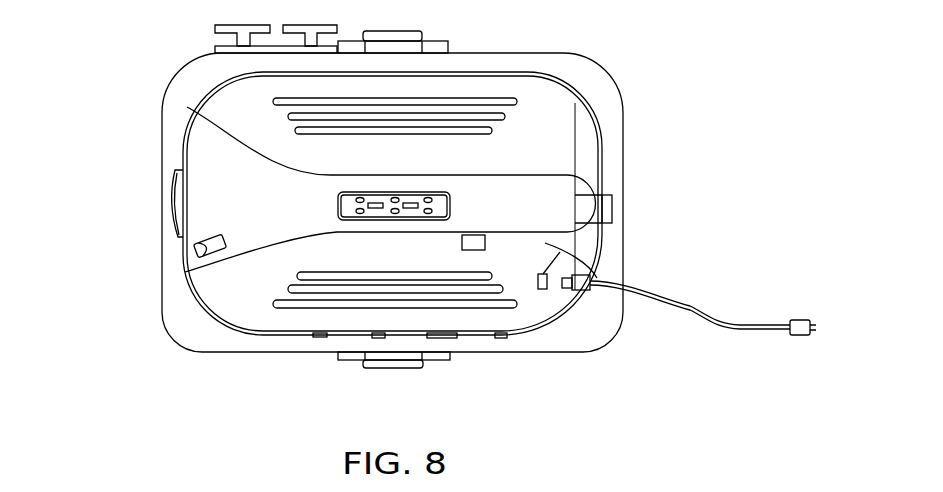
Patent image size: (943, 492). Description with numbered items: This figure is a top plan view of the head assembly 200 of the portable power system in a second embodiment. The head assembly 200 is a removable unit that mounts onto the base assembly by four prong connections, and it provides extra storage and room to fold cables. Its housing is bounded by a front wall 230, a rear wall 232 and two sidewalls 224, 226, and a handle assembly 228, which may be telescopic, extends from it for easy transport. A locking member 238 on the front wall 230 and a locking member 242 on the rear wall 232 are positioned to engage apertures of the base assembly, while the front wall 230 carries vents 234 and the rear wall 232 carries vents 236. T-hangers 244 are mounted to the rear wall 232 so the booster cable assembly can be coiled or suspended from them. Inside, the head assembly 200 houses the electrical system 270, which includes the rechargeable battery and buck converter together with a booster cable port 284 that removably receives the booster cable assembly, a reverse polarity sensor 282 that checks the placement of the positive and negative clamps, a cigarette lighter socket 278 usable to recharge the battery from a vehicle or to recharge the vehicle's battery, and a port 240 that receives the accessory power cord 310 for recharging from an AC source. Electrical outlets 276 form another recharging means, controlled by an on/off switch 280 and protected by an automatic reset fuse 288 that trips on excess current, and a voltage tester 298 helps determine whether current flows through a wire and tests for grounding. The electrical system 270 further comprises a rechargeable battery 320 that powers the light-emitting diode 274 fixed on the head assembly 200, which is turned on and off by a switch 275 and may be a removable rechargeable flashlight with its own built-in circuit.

The head assembly 200 is at (612, 66).
The sidewall 224 is at (162, 146).
The sidewall 226 is at (623, 109).
The handle assembly 228 is at (512, 215).
The front wall 230 is at (567, 353).
The rear wall 232 is at (560, 53).
The vents 234 is at (312, 274).
The vents 236 is at (290, 116).
The locking member 238 is at (358, 362).
The port 240 is at (547, 274).
The locking member 242 is at (436, 41).
The T-hangers 244 is at (216, 33).
The electrical system 270 is at (318, 95).
The light-emitting diode 274 is at (174, 193).
The switch 275 is at (194, 249).
The electrical outlets 276 is at (305, 333).
The cigarette lighter socket 278 is at (458, 340).
The switch 280 is at (373, 336).
The reverse polarity sensor 282 is at (499, 336).
The booster cable port 284 is at (613, 208).
The automatic reset fuse 288 is at (487, 241).
The voltage tester 298 is at (432, 192).
The accessory power cord 310 is at (702, 293).
The rechargeable battery 320 is at (236, 150).